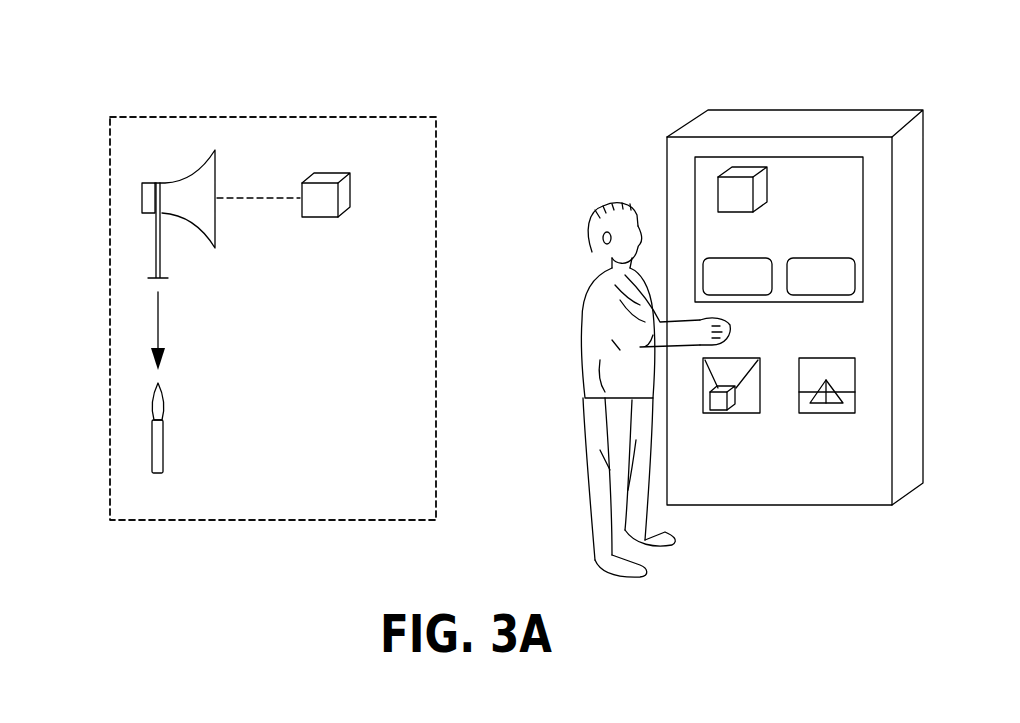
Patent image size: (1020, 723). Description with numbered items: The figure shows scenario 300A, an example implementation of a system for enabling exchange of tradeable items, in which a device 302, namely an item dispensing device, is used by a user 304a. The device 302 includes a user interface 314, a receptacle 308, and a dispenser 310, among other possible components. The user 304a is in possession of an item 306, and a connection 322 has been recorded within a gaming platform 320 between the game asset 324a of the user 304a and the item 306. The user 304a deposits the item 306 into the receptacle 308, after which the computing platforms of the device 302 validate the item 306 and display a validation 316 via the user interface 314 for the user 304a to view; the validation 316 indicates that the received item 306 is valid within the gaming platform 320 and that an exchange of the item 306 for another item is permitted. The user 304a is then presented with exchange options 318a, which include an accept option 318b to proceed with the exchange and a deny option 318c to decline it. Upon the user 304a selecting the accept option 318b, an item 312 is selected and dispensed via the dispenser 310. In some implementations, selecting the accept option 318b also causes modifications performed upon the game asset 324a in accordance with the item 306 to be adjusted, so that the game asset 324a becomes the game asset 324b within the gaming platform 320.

The scenario 300A is at (138, 83).
The device 302 is at (802, 110).
The user 304a is at (580, 290).
The item 306 is at (718, 413).
The receptacle 308 is at (745, 358).
The dispenser 310 is at (855, 373).
The item 312 is at (826, 406).
The user interface 314 is at (752, 157).
The validation 316 is at (819, 153).
The exchange options 318a is at (815, 243).
The accept option 318b is at (710, 258).
The deny option 318c is at (855, 280).
The gaming platform 320 is at (272, 117).
The connection 322 is at (276, 221).
The game asset 324a is at (161, 255).
The game asset 324b is at (163, 445).